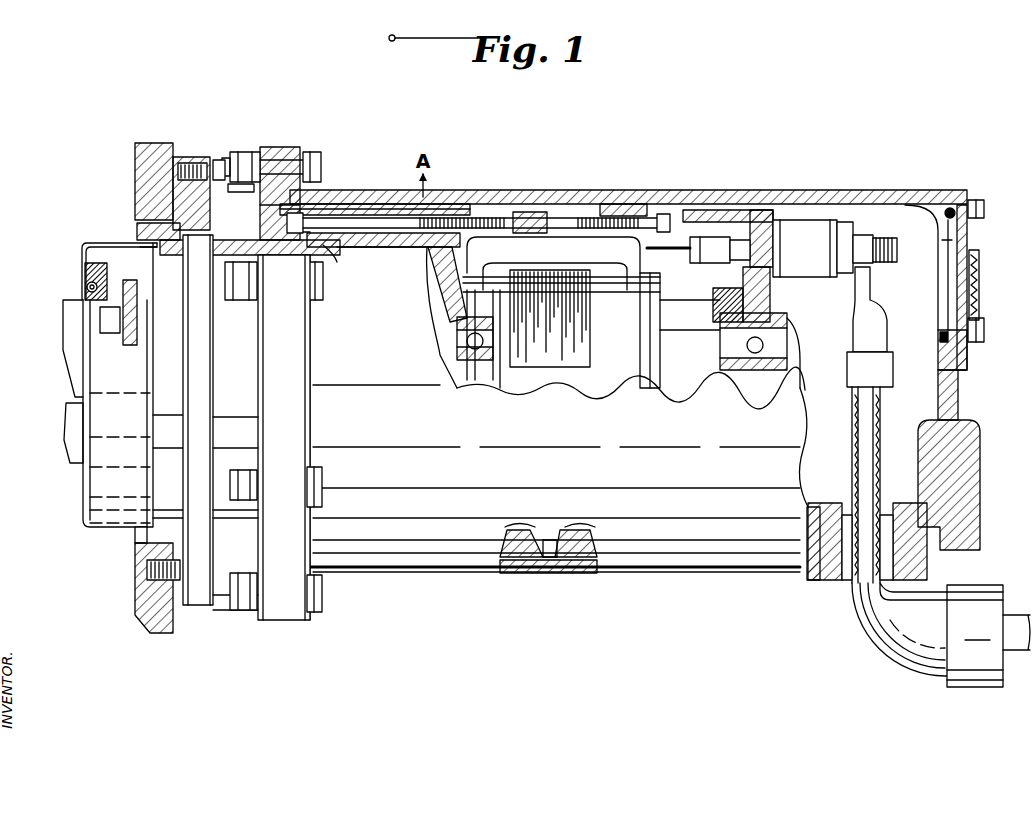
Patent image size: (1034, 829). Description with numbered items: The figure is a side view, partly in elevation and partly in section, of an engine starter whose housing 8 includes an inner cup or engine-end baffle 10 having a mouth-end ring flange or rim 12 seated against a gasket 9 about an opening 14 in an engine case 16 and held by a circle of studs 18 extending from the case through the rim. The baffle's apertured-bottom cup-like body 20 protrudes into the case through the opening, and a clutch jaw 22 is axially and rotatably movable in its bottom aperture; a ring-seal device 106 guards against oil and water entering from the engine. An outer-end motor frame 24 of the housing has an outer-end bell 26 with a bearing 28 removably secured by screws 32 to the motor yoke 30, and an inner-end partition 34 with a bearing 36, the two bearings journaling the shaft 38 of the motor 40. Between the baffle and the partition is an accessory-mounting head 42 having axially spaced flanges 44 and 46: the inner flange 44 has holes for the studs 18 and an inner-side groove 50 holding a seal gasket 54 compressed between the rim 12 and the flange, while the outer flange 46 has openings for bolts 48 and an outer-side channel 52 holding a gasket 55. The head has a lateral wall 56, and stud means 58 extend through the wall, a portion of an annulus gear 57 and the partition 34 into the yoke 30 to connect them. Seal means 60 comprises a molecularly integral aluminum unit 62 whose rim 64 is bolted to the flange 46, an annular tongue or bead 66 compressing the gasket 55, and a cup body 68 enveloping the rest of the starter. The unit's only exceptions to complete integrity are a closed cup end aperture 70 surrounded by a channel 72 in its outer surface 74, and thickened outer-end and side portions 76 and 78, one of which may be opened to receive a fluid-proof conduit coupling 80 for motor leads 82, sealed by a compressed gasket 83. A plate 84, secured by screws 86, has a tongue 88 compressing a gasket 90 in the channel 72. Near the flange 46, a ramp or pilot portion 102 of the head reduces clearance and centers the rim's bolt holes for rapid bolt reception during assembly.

The housing 8 is at (229, 134).
The gasket 9 is at (180, 150).
The inner cup or engine-end baffle 10 is at (79, 239).
The mouth-end ring flange or rim 12 is at (187, 608).
The opening 14 is at (135, 542).
The engine case 16 is at (141, 625).
The studs 18 is at (141, 588).
The cup-like portion or body 20 is at (86, 494).
The clutch member or jaw 22 is at (62, 324).
The motor frame or portion 24 is at (549, 206).
The outer-end bell 26 is at (771, 303).
The bearing 28 is at (784, 338).
The motor yoke 30 is at (531, 212).
The screws 32 is at (539, 553).
The inner-end partition 34 is at (450, 290).
The bearing 36 is at (458, 350).
The shaft 38 is at (481, 384).
The dynamo or motor 40 is at (543, 257).
The accessory-mounting head or housing portion 42 is at (252, 244).
The axially inner flange 44 is at (193, 157).
The axially outer flange 46 is at (258, 151).
The bolts 48 is at (316, 153).
The annular groove 50 is at (236, 243).
The annular channel 52 is at (270, 198).
The annular seal gasket 54 is at (286, 212).
The gasket 55 is at (273, 240).
The lateral wall 56 is at (311, 257).
The annulus gear 57 is at (386, 249).
The stud means 58 is at (363, 221).
The seal means 60 is at (661, 159).
The integral unit 62 is at (722, 190).
The rim 64 is at (291, 152).
The annular tongue or bead 66 is at (306, 195).
The cup body portion 68 is at (446, 577).
The closed cup end aperture 70 is at (940, 258).
The channel 72 is at (950, 207).
The outer surface 74 is at (961, 357).
The thickened outer-end portion 76 is at (981, 470).
The thickened side portion 78 is at (814, 504).
The conduit coupling 80 is at (846, 640).
The motor leads 82 is at (886, 425).
The gasket 83 is at (914, 521).
The plate 84 is at (966, 242).
The screws 86 is at (979, 337).
The tongue 88 is at (969, 208).
The gasket 90 is at (951, 336).
The ramp or pilot portion 102 is at (334, 205).
The ring-seal device 106 is at (75, 282).